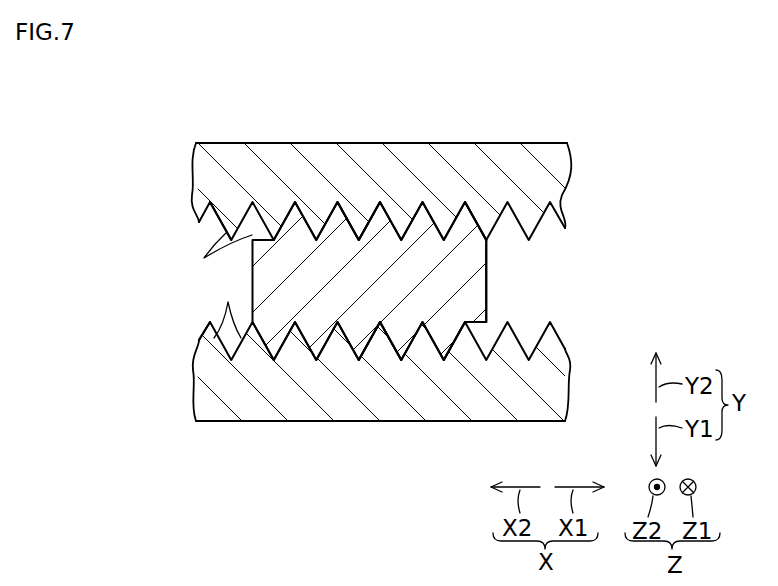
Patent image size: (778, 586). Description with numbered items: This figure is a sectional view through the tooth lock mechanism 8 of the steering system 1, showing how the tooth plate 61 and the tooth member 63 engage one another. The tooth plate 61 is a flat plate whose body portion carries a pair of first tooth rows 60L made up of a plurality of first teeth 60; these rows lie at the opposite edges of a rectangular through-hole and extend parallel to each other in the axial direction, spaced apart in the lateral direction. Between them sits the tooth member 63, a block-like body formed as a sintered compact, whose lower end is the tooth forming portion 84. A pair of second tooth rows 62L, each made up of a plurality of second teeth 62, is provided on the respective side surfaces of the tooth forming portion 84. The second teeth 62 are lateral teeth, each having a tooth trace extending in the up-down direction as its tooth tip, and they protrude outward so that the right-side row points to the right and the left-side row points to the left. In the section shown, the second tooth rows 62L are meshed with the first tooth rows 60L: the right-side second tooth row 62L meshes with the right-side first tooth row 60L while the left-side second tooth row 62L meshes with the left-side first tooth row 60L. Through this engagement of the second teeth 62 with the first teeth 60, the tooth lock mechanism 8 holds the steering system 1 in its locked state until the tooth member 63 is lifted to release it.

The steering system 1 is at (362, 235).
The tooth lock mechanism 8 is at (362, 246).
The tooth plate 61 is at (586, 151).
The second teeth 62 is at (376, 214).
The second tooth rows 62L is at (478, 210).
The tooth member 63 is at (495, 272).
The tooth forming portion 84 is at (488, 294).
The first teeth 60 is at (204, 258).
The first tooth rows 60L is at (214, 230).